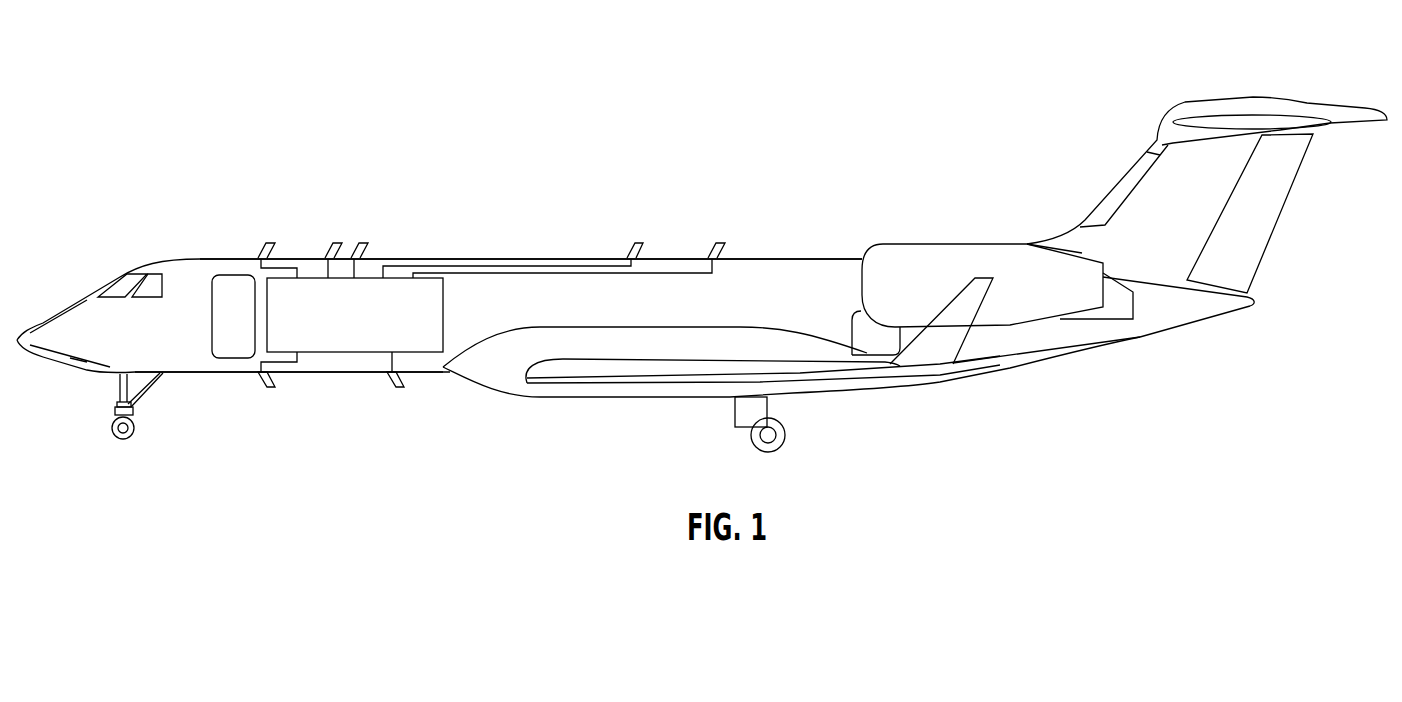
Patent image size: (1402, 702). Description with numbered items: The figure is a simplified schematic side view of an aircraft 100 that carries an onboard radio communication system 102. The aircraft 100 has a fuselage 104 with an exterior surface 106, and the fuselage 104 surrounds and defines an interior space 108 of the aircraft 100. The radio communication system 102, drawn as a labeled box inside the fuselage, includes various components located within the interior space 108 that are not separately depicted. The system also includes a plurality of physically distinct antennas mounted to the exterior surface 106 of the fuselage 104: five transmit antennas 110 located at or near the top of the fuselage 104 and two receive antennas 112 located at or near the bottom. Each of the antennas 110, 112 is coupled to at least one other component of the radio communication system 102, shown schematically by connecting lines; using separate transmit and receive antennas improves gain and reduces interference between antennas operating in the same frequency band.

The aircraft 100 is at (148, 113).
The radio communication system 102 is at (443, 315).
The fuselage 104 is at (847, 257).
The exterior surface 106 is at (210, 377).
The interior space 108 is at (763, 288).
The transmit antennas 110 is at (367, 236).
The receive antennas 112 is at (405, 393).